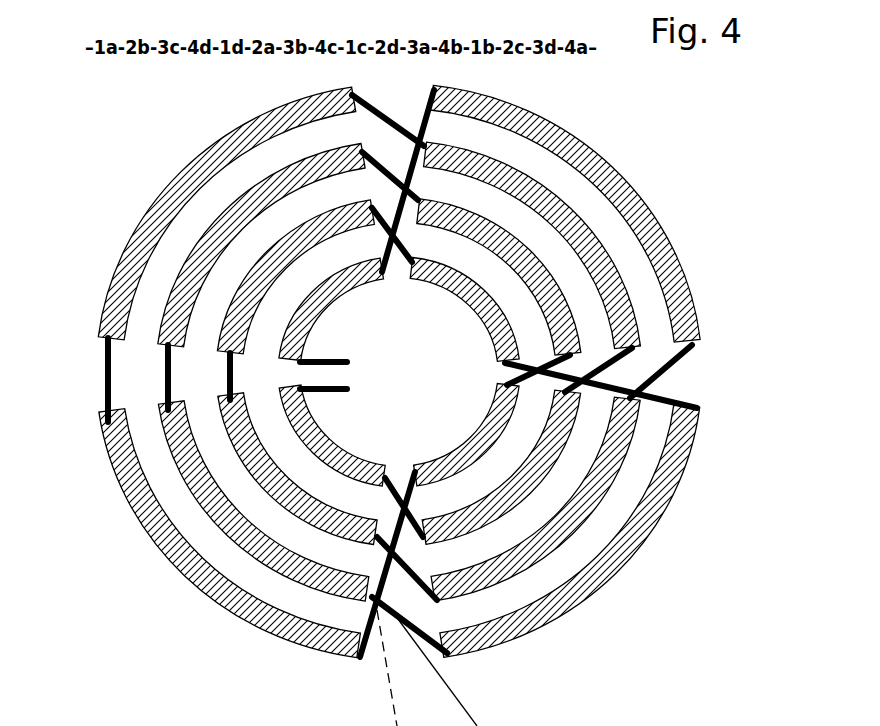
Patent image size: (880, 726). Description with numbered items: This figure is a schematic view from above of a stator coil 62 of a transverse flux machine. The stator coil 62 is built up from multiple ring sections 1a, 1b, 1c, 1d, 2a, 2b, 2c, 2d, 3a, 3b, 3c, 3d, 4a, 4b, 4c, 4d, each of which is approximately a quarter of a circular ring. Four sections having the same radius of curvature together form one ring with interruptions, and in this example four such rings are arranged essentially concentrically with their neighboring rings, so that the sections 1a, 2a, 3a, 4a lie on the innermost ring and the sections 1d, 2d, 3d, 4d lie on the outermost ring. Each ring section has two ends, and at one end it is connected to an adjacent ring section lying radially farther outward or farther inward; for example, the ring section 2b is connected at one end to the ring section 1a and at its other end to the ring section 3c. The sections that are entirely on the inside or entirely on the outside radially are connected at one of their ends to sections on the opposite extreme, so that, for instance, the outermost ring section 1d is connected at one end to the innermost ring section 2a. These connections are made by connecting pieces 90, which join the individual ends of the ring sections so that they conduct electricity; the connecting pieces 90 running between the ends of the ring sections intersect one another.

The ring section 1a is at (322, 428).
The ring section 1b is at (284, 485).
The ring section 1c is at (268, 540).
The ring section 1d is at (238, 595).
The ring section 2a is at (490, 450).
The ring section 2b is at (545, 472).
The ring section 2c is at (612, 472).
The ring section 2d is at (690, 468).
The ring section 3a is at (503, 304).
The ring section 3b is at (552, 270).
The ring section 3c is at (586, 222).
The ring section 3d is at (648, 178).
The ring section 4a is at (336, 313).
The ring section 4b is at (282, 268).
The ring section 4c is at (262, 211).
The ring section 4d is at (220, 170).
The stator coil 62 is at (137, 182).
The connecting pieces 90 is at (223, 400).